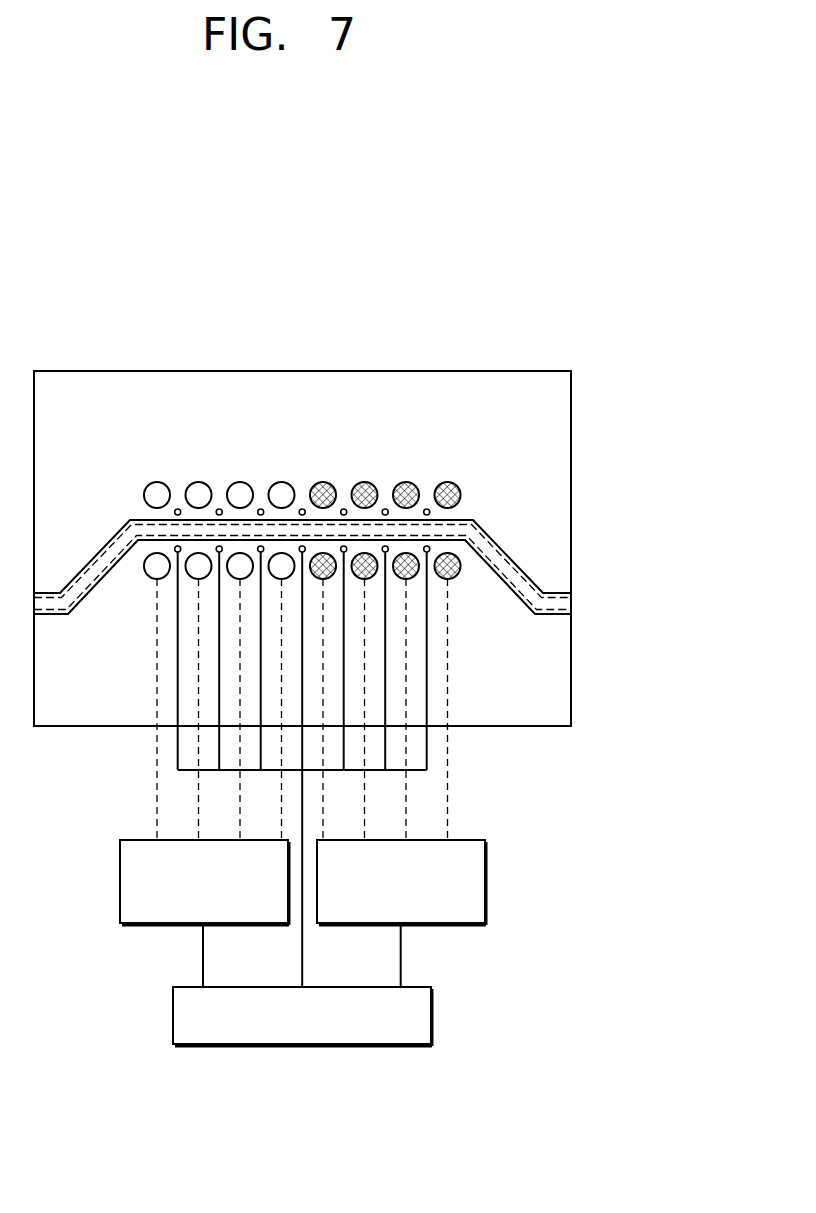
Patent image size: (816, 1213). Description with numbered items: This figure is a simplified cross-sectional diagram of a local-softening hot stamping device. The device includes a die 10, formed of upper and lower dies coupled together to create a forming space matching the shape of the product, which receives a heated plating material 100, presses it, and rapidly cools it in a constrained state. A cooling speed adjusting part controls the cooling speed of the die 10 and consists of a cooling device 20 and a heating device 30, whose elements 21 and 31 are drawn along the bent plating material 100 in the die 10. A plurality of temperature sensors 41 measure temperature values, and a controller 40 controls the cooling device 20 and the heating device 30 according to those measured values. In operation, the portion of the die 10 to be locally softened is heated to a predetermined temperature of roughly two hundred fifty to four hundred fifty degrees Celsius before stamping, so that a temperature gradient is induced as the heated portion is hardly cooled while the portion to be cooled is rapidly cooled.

The die 10 is at (507, 388).
The plating material 100 is at (515, 563).
The cooling nozzles 21 is at (147, 573).
The heaters 31 is at (450, 577).
The temperature sensors 41 is at (426, 546).
The cooling device 20 is at (120, 880).
The heating device 30 is at (487, 880).
The controller 40 is at (431, 1016).